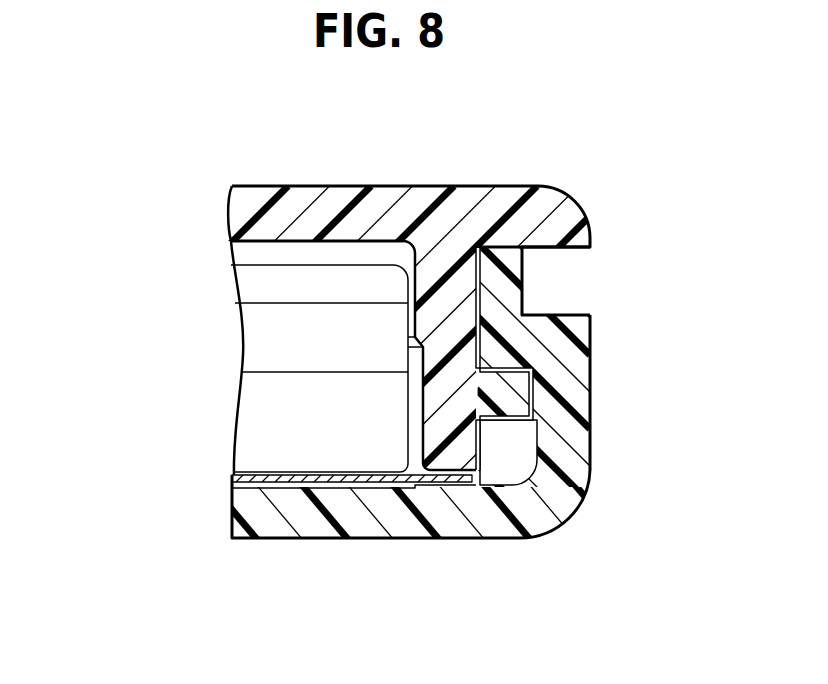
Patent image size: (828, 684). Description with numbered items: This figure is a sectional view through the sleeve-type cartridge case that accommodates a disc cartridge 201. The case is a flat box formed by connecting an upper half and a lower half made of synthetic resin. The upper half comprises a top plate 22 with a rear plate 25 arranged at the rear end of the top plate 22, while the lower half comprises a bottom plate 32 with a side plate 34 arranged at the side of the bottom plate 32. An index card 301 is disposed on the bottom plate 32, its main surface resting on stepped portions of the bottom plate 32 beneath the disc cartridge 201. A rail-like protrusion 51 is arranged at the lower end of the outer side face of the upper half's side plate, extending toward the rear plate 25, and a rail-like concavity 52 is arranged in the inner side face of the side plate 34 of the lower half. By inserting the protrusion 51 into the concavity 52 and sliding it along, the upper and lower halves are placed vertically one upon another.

The top plate 22 is at (333, 203).
The rear plate 25 is at (450, 333).
The side plate 34 is at (507, 285).
The protrusion 51 is at (520, 395).
The concavity 52 is at (537, 407).
The bottom plate 32 is at (453, 520).
The disc cartridge 201 is at (218, 338).
The index card 301 is at (245, 477).